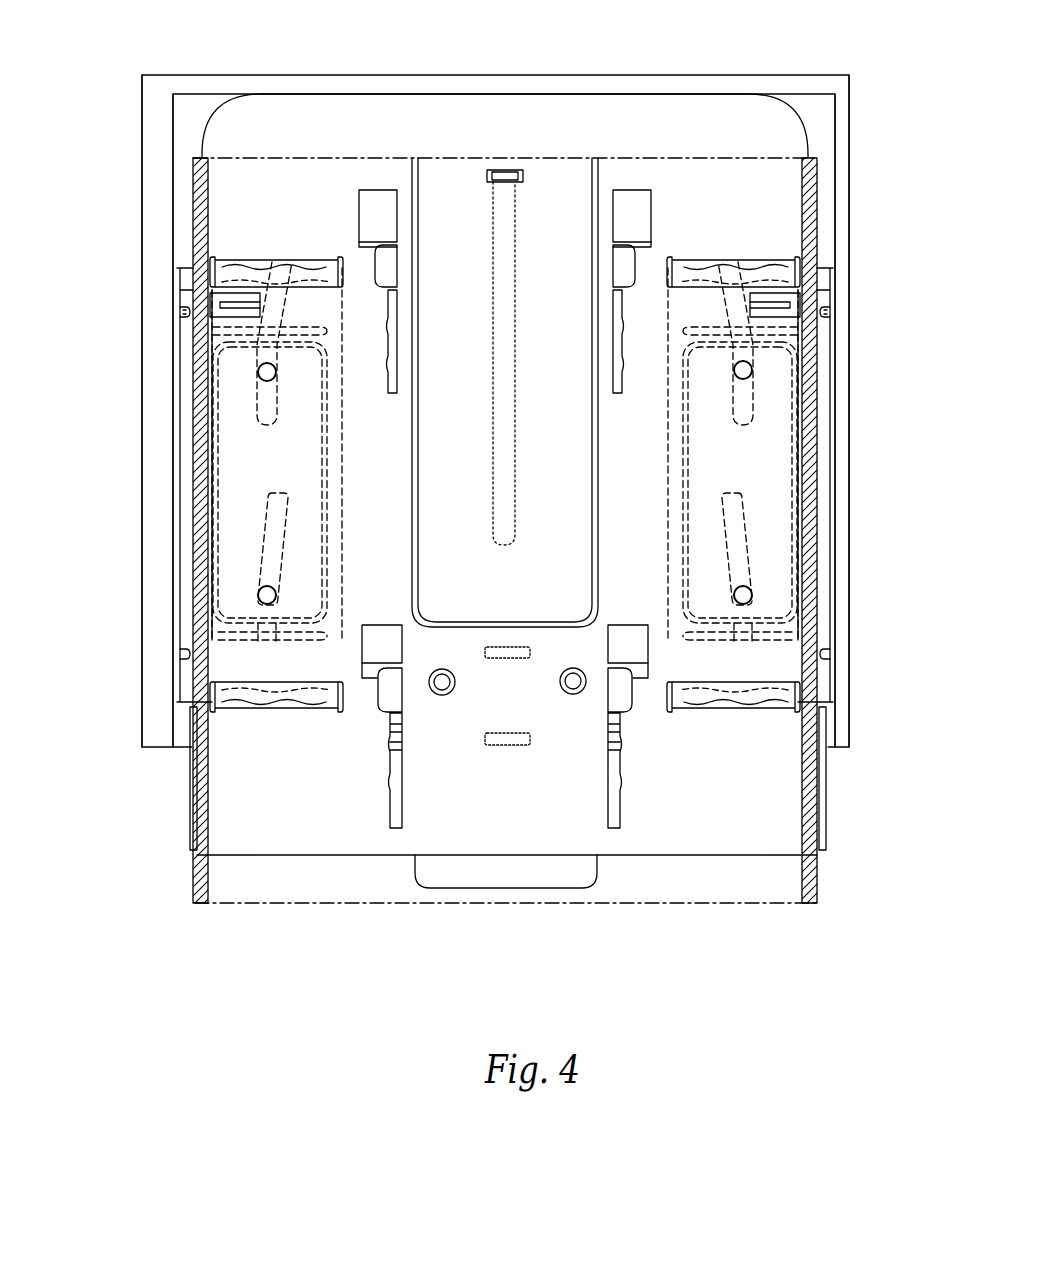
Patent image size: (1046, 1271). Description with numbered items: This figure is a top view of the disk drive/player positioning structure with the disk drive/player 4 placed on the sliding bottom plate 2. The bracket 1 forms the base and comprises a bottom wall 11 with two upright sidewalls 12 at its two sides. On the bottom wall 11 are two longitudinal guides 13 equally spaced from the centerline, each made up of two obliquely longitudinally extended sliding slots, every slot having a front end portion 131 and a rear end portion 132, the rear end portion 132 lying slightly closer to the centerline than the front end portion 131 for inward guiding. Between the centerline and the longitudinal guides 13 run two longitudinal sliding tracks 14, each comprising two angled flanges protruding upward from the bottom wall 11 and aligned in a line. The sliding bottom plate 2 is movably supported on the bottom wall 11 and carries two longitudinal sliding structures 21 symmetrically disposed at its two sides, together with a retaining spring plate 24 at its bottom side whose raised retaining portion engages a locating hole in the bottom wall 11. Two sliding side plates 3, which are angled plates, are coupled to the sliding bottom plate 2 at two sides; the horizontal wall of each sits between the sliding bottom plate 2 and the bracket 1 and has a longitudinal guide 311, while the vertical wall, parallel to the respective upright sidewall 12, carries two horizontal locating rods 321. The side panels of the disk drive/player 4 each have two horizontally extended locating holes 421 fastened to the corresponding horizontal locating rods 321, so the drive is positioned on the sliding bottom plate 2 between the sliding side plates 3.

The bracket 1 is at (793, 90).
The bottom wall 11 is at (253, 80).
The upright sidewall 12 is at (158, 152).
The longitudinal guide 13 is at (262, 390).
The front end portion 131 is at (267, 427).
The rear end portion 132 is at (278, 270).
The longitudinal sliding track 14 is at (390, 262).
The sliding bottom plate 2 is at (668, 170).
The longitudinal sliding structure 21 is at (378, 192).
The retaining spring plate 24 is at (530, 890).
The sliding side plate 3 is at (175, 408).
The longitudinal guide 311 is at (258, 370).
The horizontal locating rod 321 is at (180, 311).
The disk drive/player 4 is at (262, 900).
The horizontally extended locating hole 421 is at (208, 310).